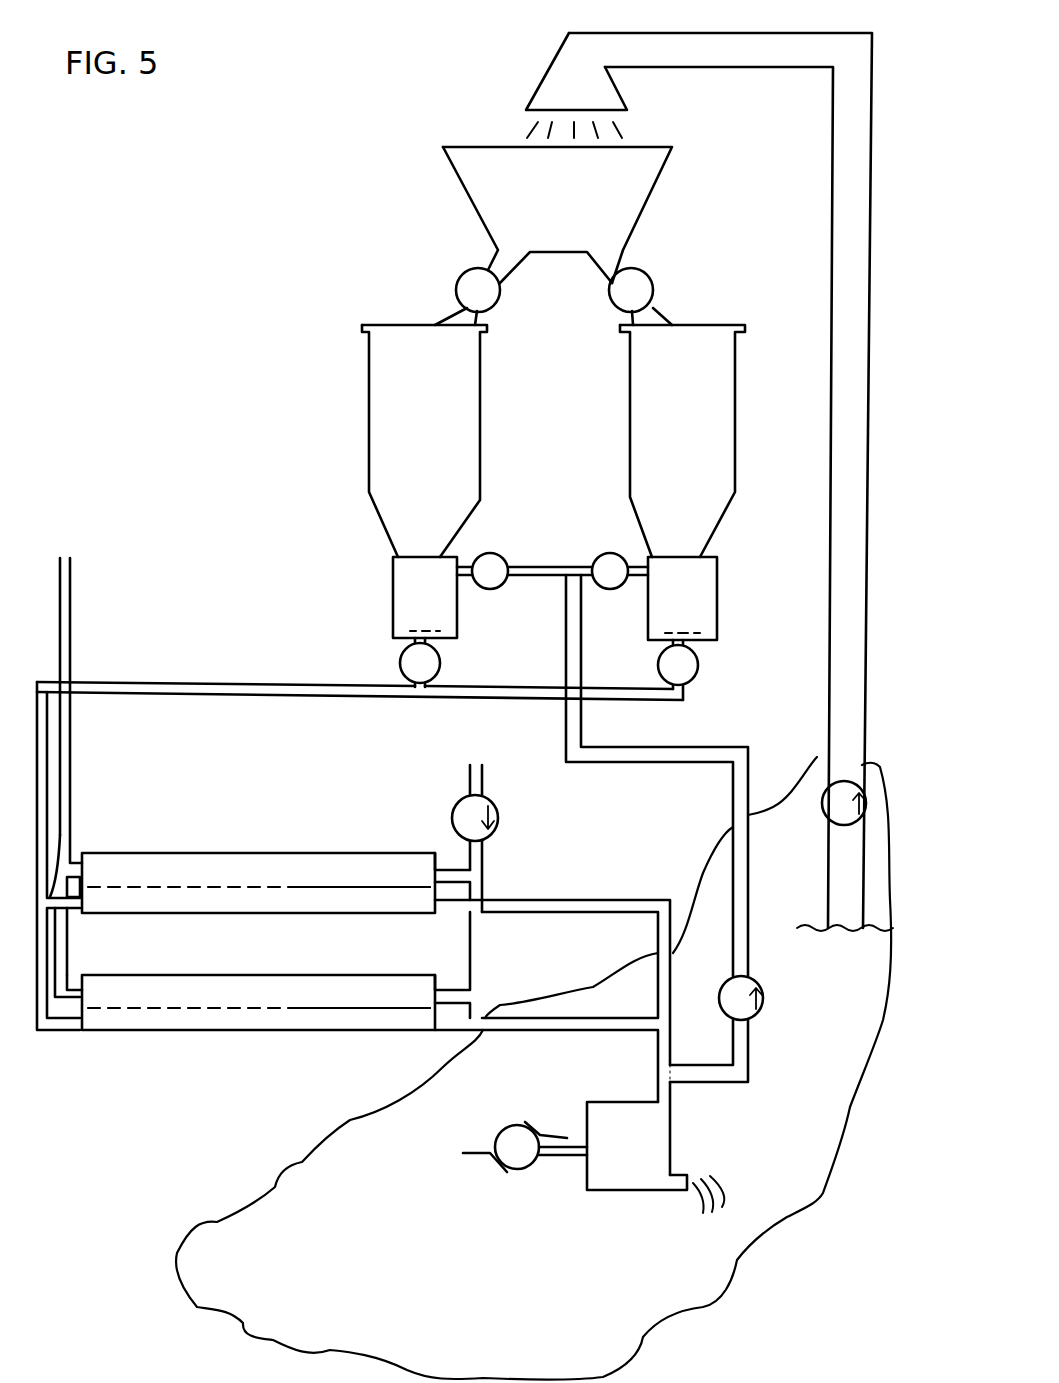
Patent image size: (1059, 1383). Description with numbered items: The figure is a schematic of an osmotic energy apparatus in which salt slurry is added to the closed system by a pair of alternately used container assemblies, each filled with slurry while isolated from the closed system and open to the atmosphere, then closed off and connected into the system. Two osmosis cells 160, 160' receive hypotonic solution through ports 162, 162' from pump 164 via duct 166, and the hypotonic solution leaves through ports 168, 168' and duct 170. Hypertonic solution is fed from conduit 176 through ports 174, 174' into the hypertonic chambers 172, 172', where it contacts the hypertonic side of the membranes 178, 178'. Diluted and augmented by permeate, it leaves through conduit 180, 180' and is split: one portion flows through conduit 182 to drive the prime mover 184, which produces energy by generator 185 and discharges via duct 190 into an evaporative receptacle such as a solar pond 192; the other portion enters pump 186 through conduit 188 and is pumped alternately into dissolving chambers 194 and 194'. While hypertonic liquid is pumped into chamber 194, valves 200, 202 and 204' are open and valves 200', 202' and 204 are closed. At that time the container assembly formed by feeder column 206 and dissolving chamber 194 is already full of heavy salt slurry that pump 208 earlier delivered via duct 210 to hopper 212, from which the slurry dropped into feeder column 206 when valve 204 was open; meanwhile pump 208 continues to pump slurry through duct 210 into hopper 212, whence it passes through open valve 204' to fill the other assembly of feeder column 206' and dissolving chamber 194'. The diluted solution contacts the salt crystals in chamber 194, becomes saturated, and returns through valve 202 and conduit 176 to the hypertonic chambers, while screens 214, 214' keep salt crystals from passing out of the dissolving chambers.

The osmosis cell 160 is at (258, 863).
The osmosis cell 160' is at (258, 982).
The port 162 is at (429, 857).
The port 162' is at (431, 951).
The pump 164 is at (493, 805).
The duct 166 is at (483, 850).
The port 168 is at (110, 855).
The port 168' is at (104, 962).
The duct 170 is at (62, 742).
The hypertonic chamber 172 is at (259, 925).
The hypertonic chamber 172' is at (259, 1048).
The port 174 is at (102, 836).
The port 174' is at (89, 996).
The conduit 176 is at (232, 700).
The membrane 178 is at (365, 925).
The membrane 178' is at (365, 1048).
The conduit 180 is at (552, 1017).
The conduit 180' is at (546, 1022).
The conduit 182 is at (672, 1093).
The prime mover 184 is at (618, 1102).
The generator 185 is at (523, 1173).
The pump 186 is at (759, 990).
The conduit 188 is at (737, 1082).
The duct 190 is at (670, 1193).
The solar pond 192 is at (257, 1203).
The dissolving chamber 194 is at (377, 597).
The dissolving chamber 194' is at (719, 598).
The valve 200 is at (552, 534).
The valve 200' is at (579, 552).
The valve 202 is at (370, 662).
The valve 202' is at (728, 670).
The valve 204 is at (444, 279).
The valve 204' is at (673, 282).
The feeder column 206 is at (469, 441).
The feeder column 206' is at (638, 441).
The pump 208 is at (821, 800).
The duct 210 is at (833, 291).
The hopper 212 is at (655, 188).
The screen 214 is at (369, 615).
The screen 214' is at (729, 619).